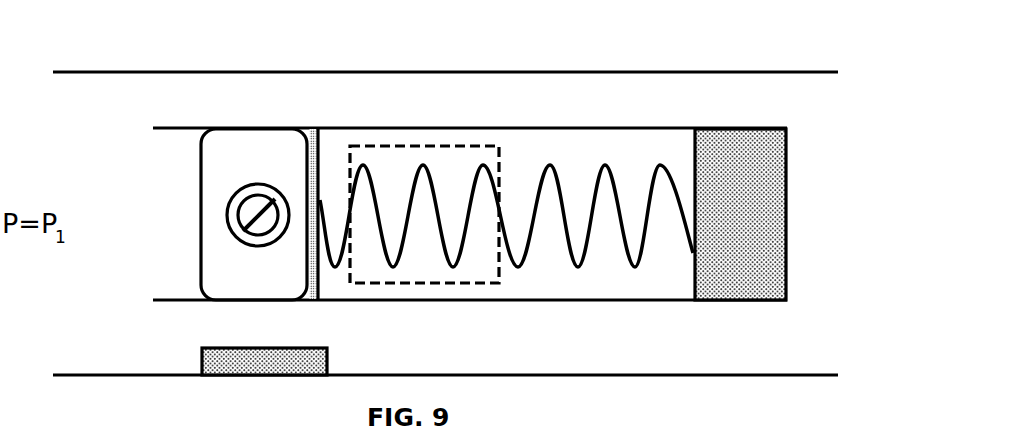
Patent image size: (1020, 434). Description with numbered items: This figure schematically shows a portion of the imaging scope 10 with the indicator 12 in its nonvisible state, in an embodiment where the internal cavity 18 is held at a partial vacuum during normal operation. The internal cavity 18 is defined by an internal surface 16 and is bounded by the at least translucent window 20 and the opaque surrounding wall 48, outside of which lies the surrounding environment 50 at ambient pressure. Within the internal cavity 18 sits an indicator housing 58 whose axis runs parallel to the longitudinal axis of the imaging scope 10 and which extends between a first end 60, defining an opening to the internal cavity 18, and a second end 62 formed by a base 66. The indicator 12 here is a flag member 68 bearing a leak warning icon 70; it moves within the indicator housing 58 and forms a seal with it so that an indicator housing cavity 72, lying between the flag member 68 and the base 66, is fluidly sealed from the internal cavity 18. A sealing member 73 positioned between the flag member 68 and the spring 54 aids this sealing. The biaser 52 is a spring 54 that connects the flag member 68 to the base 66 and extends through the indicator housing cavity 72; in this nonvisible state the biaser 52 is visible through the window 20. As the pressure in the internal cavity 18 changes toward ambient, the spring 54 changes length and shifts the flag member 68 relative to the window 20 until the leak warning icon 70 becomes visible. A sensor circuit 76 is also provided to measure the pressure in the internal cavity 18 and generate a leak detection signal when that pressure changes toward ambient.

The imaging scope 10 is at (161, 52).
The indicator 12 is at (209, 92).
The internal surface 16 is at (728, 374).
The internal cavity 18 is at (674, 113).
The window 20 is at (424, 143).
The wall 48 is at (722, 72).
The surrounding environment 50 is at (672, 53).
The biaser 52 is at (506, 251).
The spring 54 is at (577, 260).
The indicator housing 58 is at (531, 128).
The first end 60 is at (126, 154).
The second end 62 is at (804, 152).
The base 66 is at (745, 138).
The flag member 68 is at (260, 135).
The leak warning icon 70 is at (262, 247).
The indicator housing cavity 72 is at (676, 166).
The sealing member 73 is at (314, 145).
The sensor circuit 76 is at (295, 367).